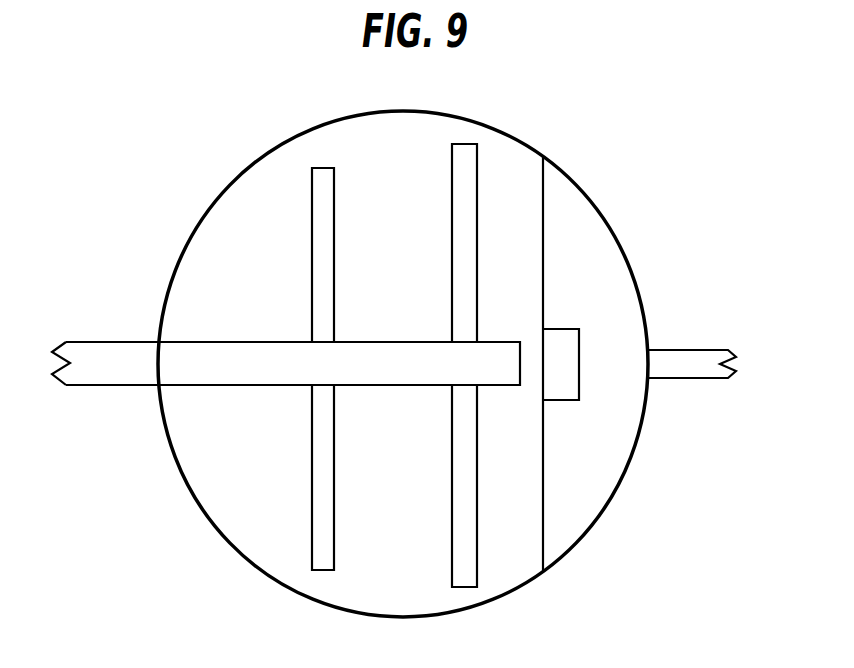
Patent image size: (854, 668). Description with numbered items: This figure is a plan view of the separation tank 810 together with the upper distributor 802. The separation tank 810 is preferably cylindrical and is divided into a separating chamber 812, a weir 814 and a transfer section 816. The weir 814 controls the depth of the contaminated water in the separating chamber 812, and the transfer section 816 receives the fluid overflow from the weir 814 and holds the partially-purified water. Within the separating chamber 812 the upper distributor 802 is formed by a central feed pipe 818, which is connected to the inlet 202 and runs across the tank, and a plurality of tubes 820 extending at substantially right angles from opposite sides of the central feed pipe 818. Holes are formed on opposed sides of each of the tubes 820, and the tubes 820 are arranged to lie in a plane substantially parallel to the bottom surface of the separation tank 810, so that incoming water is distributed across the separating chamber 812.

The separation tank 810 is at (508, 134).
The upper distributor 802 is at (317, 381).
The inlet 202 is at (146, 341).
The central feed pipe 818 is at (228, 386).
The tubes 820 is at (452, 263).
The transfer section 816 is at (613, 458).
The weir 814 is at (559, 329).
The separating chamber 812 is at (423, 537).